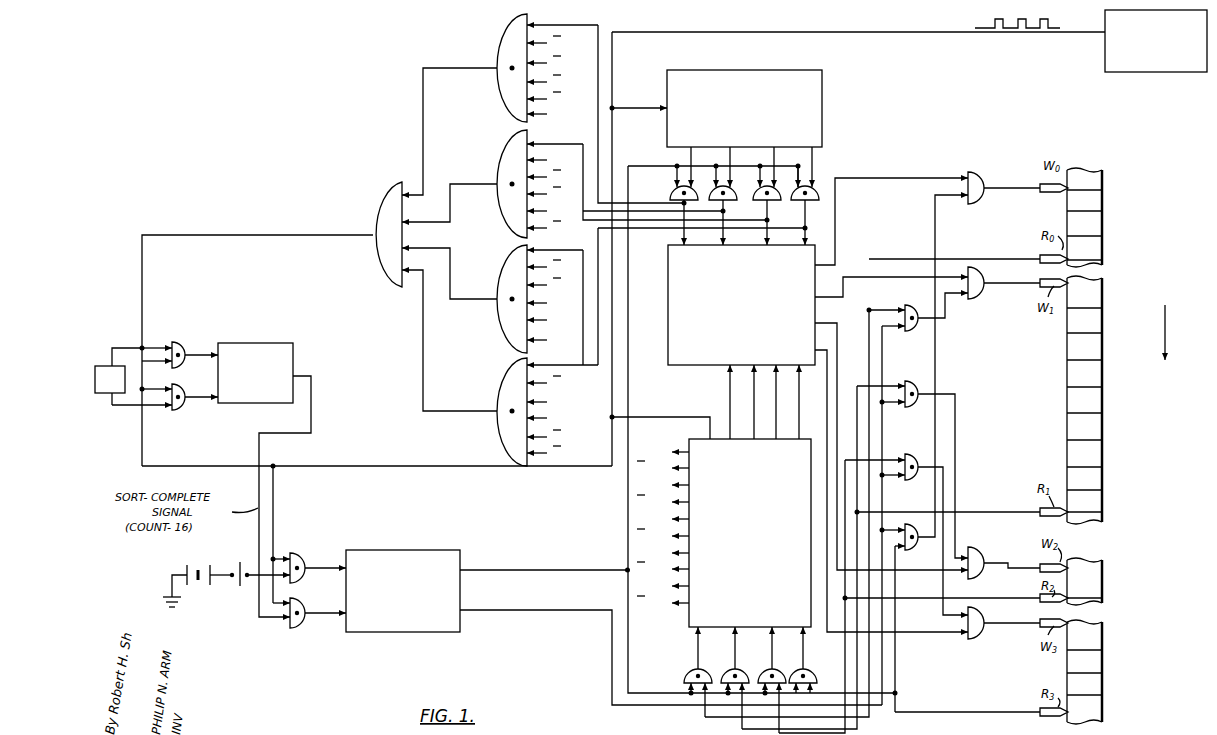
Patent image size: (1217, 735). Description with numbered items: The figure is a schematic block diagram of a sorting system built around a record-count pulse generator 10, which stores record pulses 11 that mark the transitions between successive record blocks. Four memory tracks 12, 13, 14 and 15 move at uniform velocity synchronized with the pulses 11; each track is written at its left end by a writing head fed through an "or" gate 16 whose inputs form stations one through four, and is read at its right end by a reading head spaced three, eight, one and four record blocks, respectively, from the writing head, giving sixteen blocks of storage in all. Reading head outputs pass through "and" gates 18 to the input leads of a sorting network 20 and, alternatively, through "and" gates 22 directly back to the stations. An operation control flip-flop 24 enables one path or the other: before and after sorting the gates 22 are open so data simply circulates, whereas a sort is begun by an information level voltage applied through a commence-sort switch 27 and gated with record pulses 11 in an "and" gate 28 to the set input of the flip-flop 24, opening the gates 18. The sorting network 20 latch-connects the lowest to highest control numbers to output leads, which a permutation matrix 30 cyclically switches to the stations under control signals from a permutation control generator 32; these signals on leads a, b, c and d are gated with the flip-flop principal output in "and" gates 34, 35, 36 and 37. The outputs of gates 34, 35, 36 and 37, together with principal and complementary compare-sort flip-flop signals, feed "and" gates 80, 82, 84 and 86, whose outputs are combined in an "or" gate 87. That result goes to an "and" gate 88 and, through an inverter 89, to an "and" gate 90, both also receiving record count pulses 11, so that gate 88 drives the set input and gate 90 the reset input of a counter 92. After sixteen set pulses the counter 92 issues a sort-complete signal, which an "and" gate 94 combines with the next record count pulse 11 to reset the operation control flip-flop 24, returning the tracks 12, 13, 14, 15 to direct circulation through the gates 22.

The record-count pulse generator 10 is at (1122, 76).
The record pulses 11 is at (975, 28).
The track 12 is at (1104, 222).
The track 13 is at (1104, 405).
The track 14 is at (1104, 578).
The track 15 is at (1104, 661).
The "or" gate 16 is at (982, 178).
The "and" gates 18 is at (688, 673).
The sorting network 20 is at (703, 612).
The "and" gates 22 is at (924, 302).
The operation control flip-flop 24 is at (448, 633).
The "commence-sort" switch 27 is at (241, 561).
The "and" gate 28 is at (297, 553).
The permutation matrix 30 is at (683, 351).
The permutation control generator 32 is at (805, 128).
The "and" gate 34 is at (670, 193).
The "and" gate 35 is at (728, 201).
The "and" gate 36 is at (772, 201).
The "and" gate 37 is at (812, 186).
The "and" gate 80 is at (508, 97).
The "and" gate 82 is at (508, 207).
The "and" gate 84 is at (508, 320).
The "and" gate 86 is at (508, 436).
The "or" gate 87 is at (394, 262).
The "and" gate 88 is at (178, 341).
The inverter 89 is at (100, 365).
The "and" gate 90 is at (172, 411).
The counter 92 is at (278, 348).
The "and" gate 94 is at (298, 630).